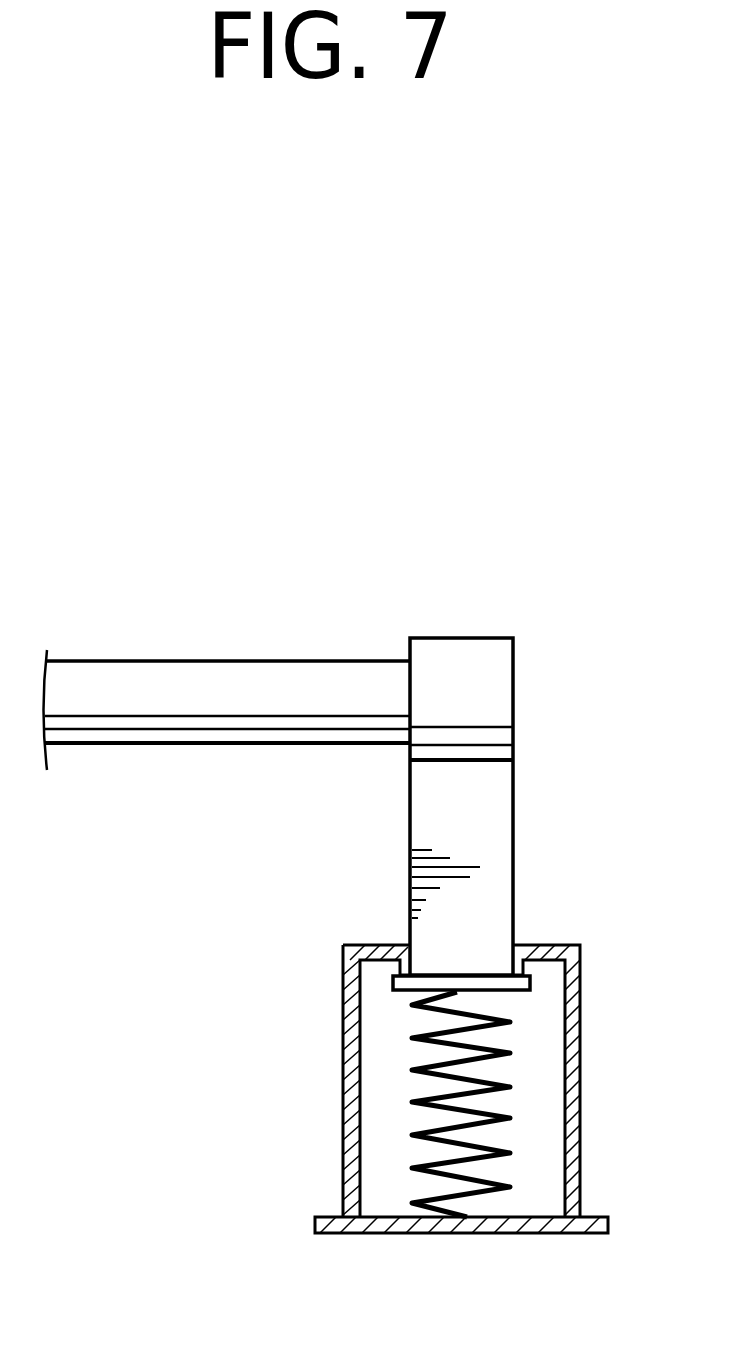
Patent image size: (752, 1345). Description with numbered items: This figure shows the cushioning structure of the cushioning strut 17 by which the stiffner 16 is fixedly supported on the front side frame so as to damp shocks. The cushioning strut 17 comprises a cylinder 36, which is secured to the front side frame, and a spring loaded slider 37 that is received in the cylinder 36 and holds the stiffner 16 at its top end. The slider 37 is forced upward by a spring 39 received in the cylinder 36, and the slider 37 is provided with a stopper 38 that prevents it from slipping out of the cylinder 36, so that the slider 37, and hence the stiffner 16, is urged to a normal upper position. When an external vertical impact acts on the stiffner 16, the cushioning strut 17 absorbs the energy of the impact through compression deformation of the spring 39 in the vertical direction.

The stiffner 16 is at (205, 683).
The cushioning strut 17 is at (471, 935).
The cylinder 36 is at (343, 1112).
The spring loaded slider 37 is at (410, 832).
The stopper 38 is at (535, 985).
The spring 39 is at (487, 1083).